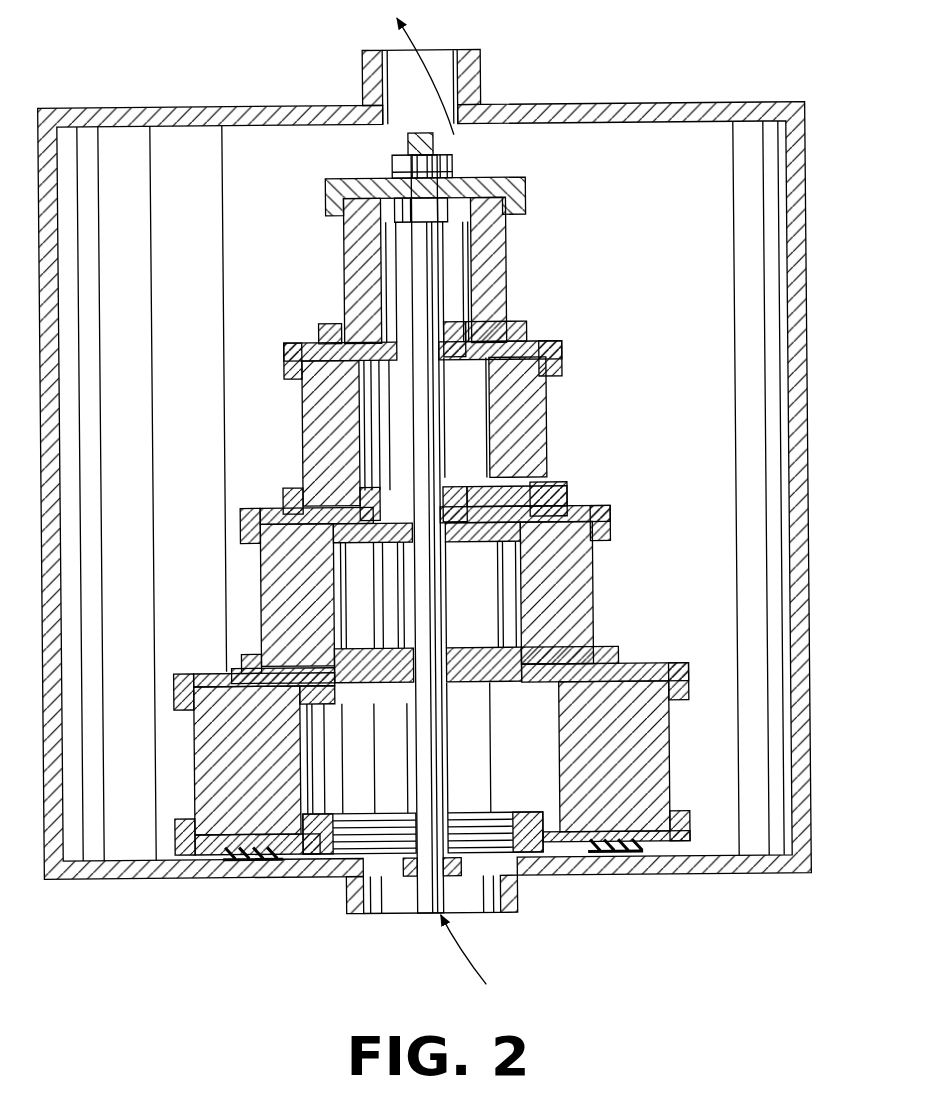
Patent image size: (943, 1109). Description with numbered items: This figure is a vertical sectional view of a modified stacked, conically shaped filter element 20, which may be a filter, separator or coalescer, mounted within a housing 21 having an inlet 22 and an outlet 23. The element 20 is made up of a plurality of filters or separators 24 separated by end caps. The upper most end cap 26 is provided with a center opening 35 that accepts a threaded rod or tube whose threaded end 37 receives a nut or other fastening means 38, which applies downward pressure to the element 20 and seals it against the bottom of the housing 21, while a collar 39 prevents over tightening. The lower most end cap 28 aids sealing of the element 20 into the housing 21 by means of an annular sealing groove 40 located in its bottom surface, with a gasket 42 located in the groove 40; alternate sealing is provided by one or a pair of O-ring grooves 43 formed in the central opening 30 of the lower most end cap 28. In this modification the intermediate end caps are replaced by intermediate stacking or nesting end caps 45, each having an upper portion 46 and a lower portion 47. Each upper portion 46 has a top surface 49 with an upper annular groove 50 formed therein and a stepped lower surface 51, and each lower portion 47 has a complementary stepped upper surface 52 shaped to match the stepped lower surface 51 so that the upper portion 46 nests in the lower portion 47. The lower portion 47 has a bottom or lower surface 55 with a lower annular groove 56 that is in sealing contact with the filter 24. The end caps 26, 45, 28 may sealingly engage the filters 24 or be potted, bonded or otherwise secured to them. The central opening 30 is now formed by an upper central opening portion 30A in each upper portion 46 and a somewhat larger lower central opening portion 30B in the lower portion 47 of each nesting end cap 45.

The stacked conically shaped filter element 20 is at (648, 272).
The housing 21 is at (822, 546).
The inlet 22 is at (414, 912).
The outlet 23 is at (440, 50).
The filters or separators 24 is at (508, 262).
The upper most end cap 26 is at (330, 195).
The lower most end cap 28 is at (180, 833).
The central opening 30 is at (446, 382).
The upper central opening portion 30A is at (398, 700).
The lower central opening portion 30B is at (362, 692).
The center opening 35 is at (402, 176).
The threaded end 37 is at (412, 140).
The nut or other fastening means 38 is at (453, 162).
The collar 39 is at (397, 212).
The annular sealing groove 40 is at (212, 846).
The gasket 42 is at (252, 860).
The O-ring grooves 43 is at (360, 845).
The intermediate nesting end caps 45 is at (566, 358).
The upper portion 46 is at (320, 333).
The lower portion 47 is at (290, 366).
The top surface 49 is at (325, 335).
The upper annular groove 50 is at (470, 328).
The stepped lower surface 51 is at (512, 332).
The stepped upper surface 52 is at (548, 388).
The bottom or lower surface 55 is at (540, 707).
The lower annular groove 56 is at (335, 378).